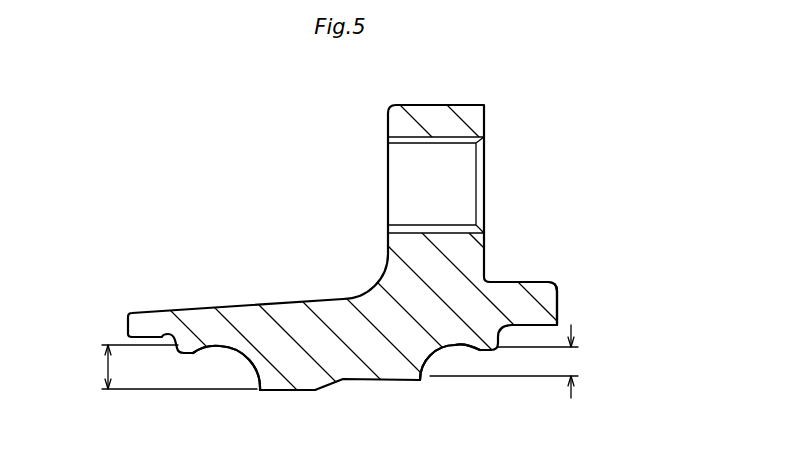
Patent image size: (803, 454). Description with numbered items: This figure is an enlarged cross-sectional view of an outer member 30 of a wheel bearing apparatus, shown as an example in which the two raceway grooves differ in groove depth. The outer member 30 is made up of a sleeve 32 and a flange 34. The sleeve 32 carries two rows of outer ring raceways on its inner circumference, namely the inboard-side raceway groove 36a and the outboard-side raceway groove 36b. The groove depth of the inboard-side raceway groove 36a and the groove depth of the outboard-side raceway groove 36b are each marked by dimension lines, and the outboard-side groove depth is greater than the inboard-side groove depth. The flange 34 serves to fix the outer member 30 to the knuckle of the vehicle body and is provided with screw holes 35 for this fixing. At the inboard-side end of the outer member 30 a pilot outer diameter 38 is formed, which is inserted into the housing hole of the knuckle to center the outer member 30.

The outer member 30 is at (232, 229).
The sleeve 32 is at (291, 316).
The flange 34 is at (433, 123).
The screw holes 35 is at (404, 183).
The inboard-side raceway groove 36a is at (447, 350).
The outboard-side raceway groove 36b is at (223, 354).
The pilot outer diameter 38 is at (521, 281).